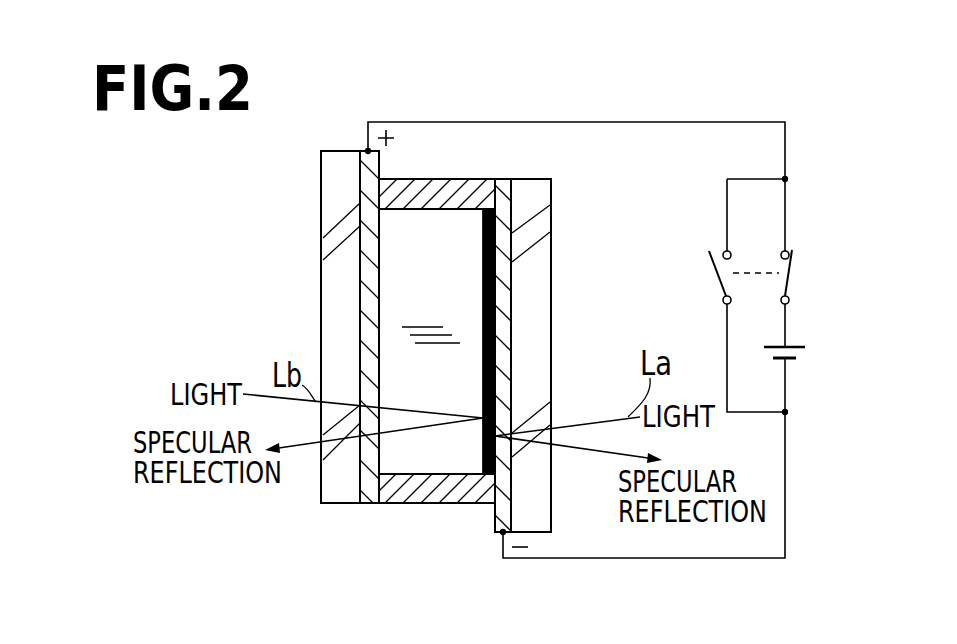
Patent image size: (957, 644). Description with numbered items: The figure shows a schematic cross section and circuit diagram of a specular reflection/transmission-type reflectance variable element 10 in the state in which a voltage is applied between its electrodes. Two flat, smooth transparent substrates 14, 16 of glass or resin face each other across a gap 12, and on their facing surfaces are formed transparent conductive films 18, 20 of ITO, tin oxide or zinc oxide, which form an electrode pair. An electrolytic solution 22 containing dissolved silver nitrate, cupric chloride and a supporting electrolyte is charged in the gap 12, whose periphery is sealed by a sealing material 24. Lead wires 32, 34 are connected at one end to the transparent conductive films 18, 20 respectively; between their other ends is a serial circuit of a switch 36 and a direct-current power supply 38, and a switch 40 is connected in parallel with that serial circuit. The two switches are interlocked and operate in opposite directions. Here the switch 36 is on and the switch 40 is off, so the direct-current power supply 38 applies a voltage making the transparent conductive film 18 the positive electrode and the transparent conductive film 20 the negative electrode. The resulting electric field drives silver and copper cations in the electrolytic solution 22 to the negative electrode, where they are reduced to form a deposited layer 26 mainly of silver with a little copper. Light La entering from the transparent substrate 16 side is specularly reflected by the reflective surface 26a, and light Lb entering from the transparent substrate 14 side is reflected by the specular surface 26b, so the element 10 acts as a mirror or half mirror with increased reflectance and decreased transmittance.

The specular reflection/transmission-type reflectance variable element 10 is at (470, 148).
The gap 12 is at (463, 503).
The transparent substrate 14 is at (330, 331).
The transparent substrate 16 is at (545, 368).
The transparent conductive film 18 is at (367, 503).
The transparent conductive film 20 is at (505, 179).
The electrolytic solution 22 is at (430, 462).
The sealing material 24 is at (427, 179).
The deposited layer 26 is at (483, 294).
The reflective surface 26a is at (506, 240).
The specular surface 26b is at (473, 266).
The lead wire 32 is at (636, 121).
The lead wire 34 is at (637, 559).
The switch 36 is at (800, 268).
The direct-current power supply 38 is at (806, 352).
The switch 40 is at (710, 268).